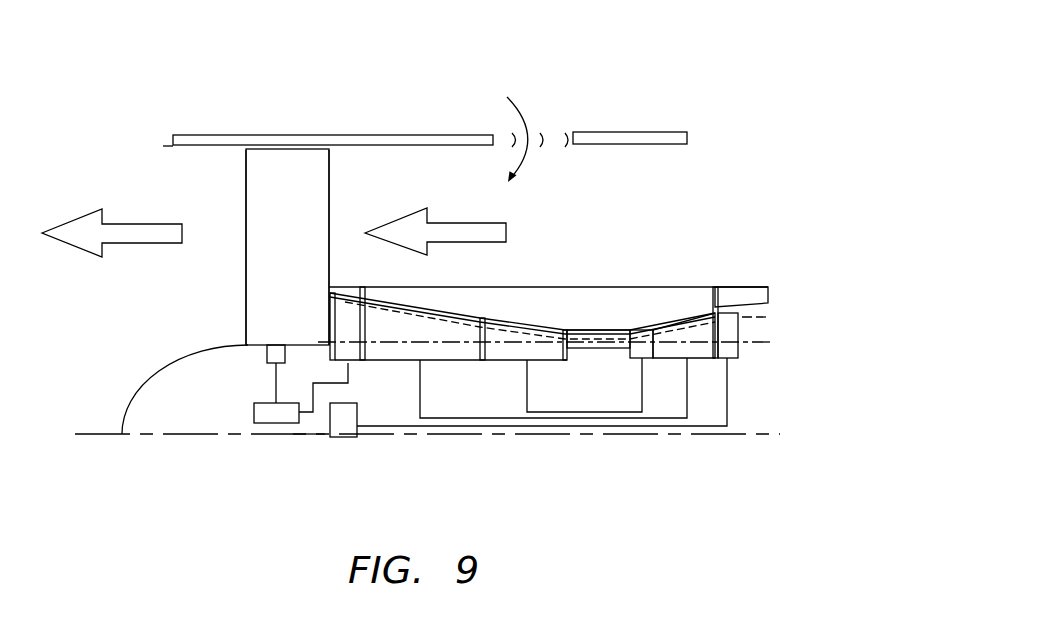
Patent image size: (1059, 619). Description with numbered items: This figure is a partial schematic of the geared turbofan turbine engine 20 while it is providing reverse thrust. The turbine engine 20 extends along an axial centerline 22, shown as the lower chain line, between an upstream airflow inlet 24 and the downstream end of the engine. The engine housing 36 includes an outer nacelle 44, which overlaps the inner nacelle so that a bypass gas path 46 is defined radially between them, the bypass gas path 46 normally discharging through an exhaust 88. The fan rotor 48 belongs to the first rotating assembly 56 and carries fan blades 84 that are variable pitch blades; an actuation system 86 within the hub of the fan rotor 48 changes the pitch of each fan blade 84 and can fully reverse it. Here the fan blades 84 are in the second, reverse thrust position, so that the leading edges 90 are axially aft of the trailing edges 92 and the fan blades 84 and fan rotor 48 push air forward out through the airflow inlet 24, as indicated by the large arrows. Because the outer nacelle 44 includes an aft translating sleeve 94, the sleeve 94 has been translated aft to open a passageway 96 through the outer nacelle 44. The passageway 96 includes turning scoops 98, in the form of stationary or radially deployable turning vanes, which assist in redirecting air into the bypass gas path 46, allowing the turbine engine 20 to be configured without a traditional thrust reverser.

The turbine engine 20 is at (121, 121).
The axial centerline 22 is at (92, 437).
The airflow inlet 24 is at (163, 146).
The engine housing 36 is at (333, 91).
The outer nacelle 44 is at (391, 122).
The bypass gas path 46 is at (625, 252).
The fan rotor 48 is at (250, 358).
The first rotating assembly 56 is at (305, 450).
The fan blades 84 is at (303, 270).
The actuation system 86 is at (244, 430).
The exhaust 88 is at (667, 104).
The leading edges 90 is at (330, 183).
The trailing edges 92 is at (246, 187).
The aft translating sleeve 94 is at (627, 132).
The passageway 96 is at (557, 137).
The turning scoops 98 is at (555, 140).